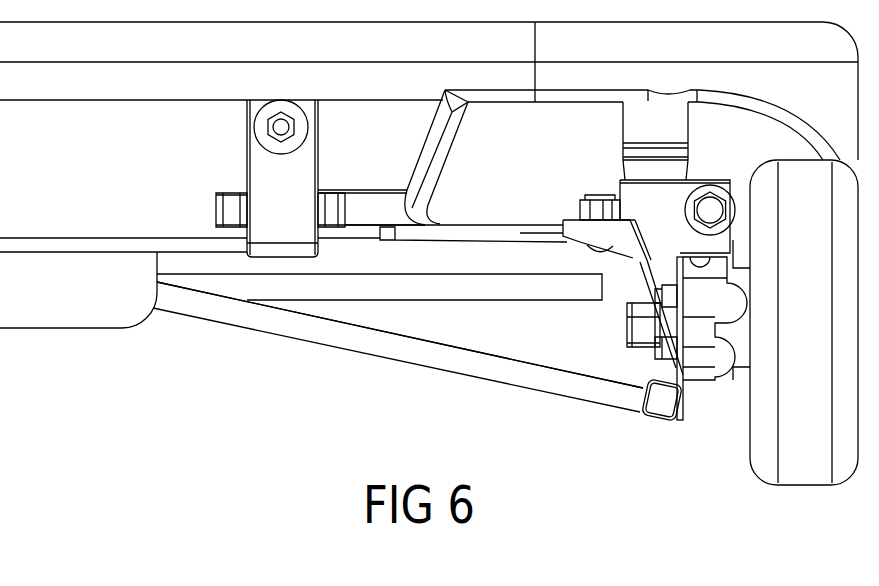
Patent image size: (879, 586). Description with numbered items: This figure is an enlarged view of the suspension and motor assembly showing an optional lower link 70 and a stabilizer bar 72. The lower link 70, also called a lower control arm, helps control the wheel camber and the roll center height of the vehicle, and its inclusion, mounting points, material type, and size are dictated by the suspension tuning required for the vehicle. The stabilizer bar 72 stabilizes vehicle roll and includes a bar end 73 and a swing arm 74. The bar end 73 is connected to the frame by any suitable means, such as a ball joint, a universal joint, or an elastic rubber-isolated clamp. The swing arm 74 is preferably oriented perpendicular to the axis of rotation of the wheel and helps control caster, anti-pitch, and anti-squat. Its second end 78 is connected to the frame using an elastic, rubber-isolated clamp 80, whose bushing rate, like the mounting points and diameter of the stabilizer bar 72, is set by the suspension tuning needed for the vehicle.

The lower link 70 is at (485, 362).
The stabilizer bar 72 is at (423, 288).
The bar end 73 is at (202, 283).
The swing arm 74 is at (583, 323).
The second end 78 is at (648, 288).
The clamp 80 is at (627, 332).